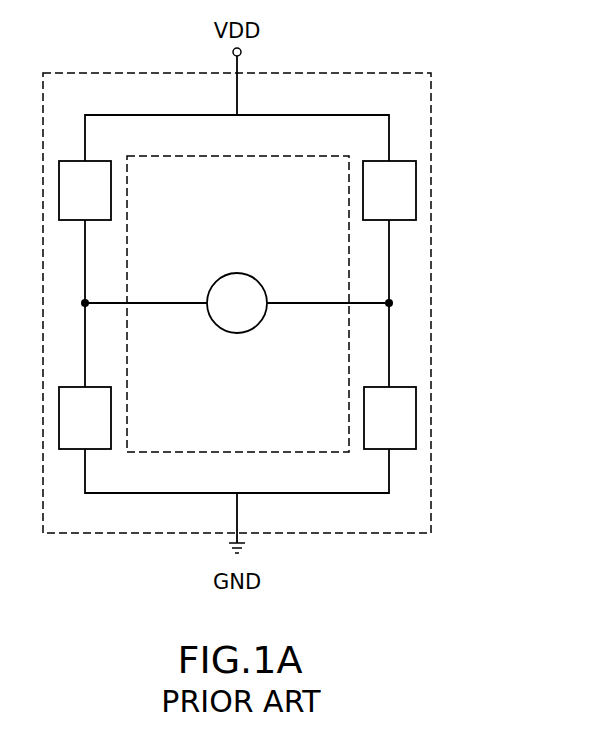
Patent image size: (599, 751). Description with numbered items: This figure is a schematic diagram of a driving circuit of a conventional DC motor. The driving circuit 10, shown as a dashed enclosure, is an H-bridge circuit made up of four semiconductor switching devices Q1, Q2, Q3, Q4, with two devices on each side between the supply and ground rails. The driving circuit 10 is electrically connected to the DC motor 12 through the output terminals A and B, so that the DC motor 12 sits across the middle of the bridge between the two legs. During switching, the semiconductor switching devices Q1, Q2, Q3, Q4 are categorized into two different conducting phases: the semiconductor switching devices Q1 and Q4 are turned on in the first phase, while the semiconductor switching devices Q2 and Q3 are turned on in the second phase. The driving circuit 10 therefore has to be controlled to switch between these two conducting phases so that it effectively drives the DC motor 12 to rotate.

The driving circuit 10 is at (431, 303).
The DC motor 12 is at (237, 304).
The semiconductor switching device Q1 is at (85, 190).
The semiconductor switching device Q2 is at (389, 190).
The semiconductor switching device Q3 is at (85, 418).
The semiconductor switching device Q4 is at (390, 418).
The output terminal A is at (74, 305).
The output terminal B is at (401, 305).